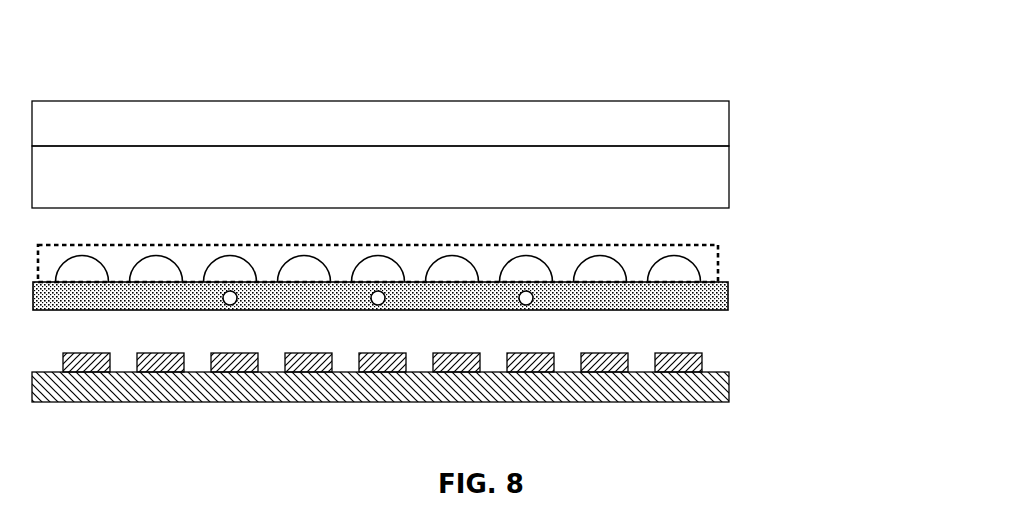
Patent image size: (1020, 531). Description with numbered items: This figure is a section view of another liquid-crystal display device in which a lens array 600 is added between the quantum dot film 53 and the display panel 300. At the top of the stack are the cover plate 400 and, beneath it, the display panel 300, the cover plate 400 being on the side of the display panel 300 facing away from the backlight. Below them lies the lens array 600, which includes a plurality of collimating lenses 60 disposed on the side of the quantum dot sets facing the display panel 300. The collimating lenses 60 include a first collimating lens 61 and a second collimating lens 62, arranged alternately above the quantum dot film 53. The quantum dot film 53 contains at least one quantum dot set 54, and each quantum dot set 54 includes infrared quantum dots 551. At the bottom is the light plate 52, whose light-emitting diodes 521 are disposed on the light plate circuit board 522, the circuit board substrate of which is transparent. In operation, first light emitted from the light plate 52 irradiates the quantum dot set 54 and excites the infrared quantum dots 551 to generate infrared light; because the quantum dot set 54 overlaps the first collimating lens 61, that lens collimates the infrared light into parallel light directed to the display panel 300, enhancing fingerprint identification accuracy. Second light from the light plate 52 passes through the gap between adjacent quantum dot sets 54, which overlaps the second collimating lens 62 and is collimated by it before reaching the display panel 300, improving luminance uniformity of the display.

The cover plate 400 is at (729, 123).
The display panel 300 is at (729, 178).
The lens array 600 is at (718, 267).
The collimating lenses 60 is at (378, 167).
The second collimating lens 62 is at (450, 257).
The first collimating lens 61 is at (527, 257).
The quantum dot film 53 is at (729, 298).
The quantum dot set 54 is at (559, 325).
The infrared quantum dots 551 is at (532, 298).
The light plate 52 is at (455, 392).
The light-emitting diodes 521 is at (699, 356).
The light plate circuit board 522 is at (813, 362).